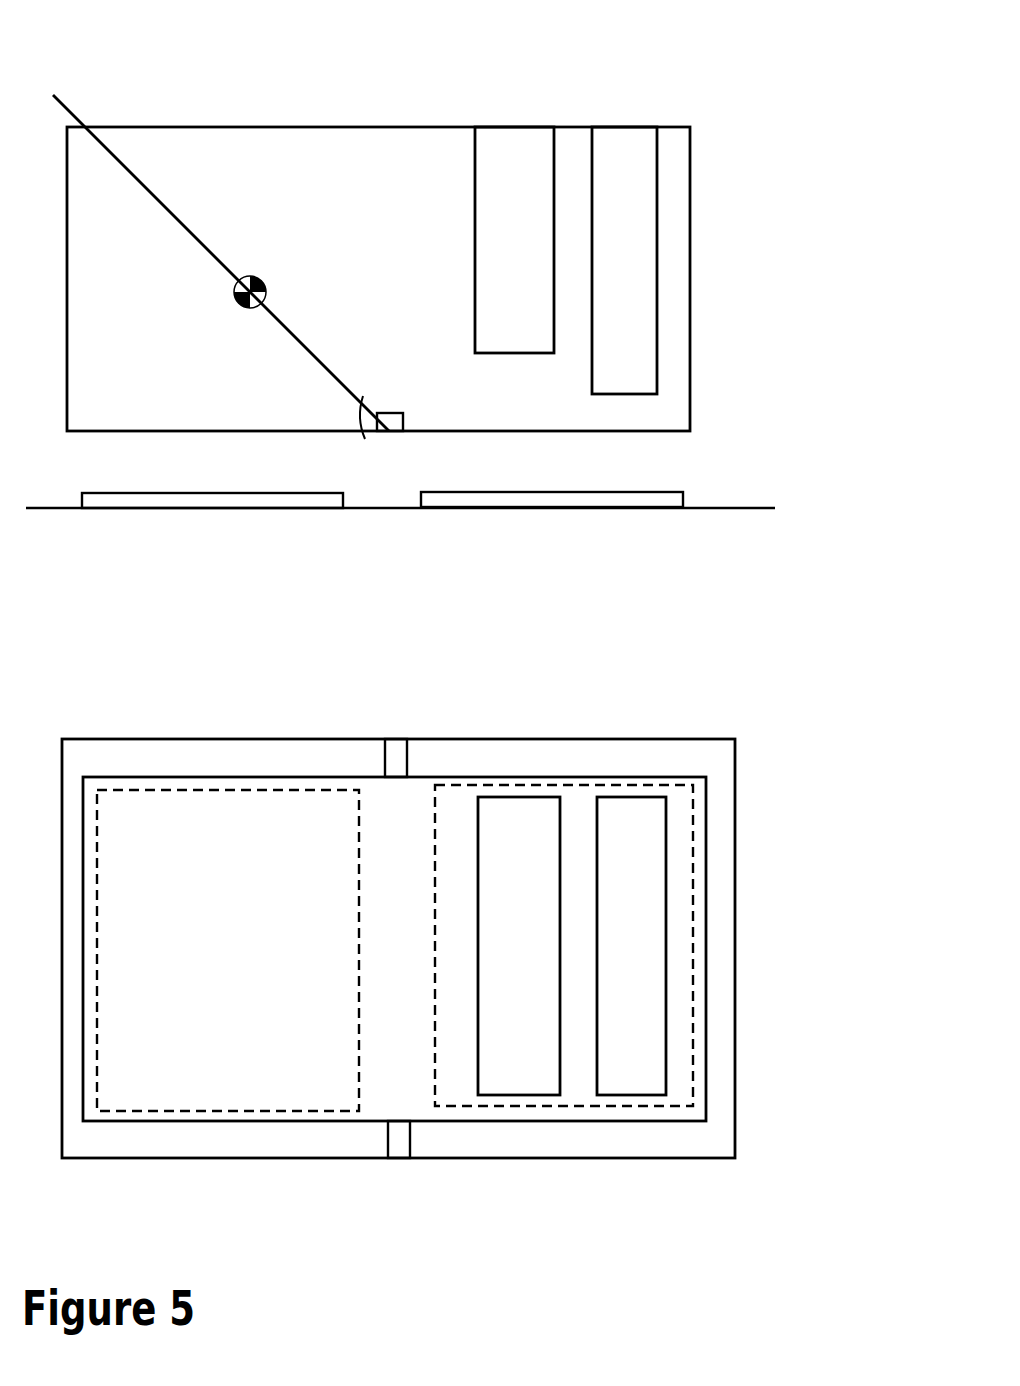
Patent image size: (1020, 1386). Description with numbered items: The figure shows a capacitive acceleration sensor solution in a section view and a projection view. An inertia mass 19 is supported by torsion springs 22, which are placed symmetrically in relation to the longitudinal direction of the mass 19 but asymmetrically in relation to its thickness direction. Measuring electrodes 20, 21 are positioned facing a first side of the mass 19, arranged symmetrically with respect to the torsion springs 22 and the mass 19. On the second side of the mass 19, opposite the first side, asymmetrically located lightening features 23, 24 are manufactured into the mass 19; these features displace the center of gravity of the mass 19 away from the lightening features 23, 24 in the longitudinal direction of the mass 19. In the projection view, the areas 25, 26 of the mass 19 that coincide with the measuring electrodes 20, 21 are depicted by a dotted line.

The inertia mass 19 is at (225, 127).
The measuring electrode 20 is at (235, 492).
The measuring electrode 21 is at (585, 491).
The torsion spring 22 is at (403, 415).
The lightening feature 23 is at (554, 201).
The lightening feature 24 is at (657, 272).
The area of the mass coinciding with measuring electrode 25 is at (498, 995).
The area of the mass coinciding with measuring electrode 26 is at (693, 1068).